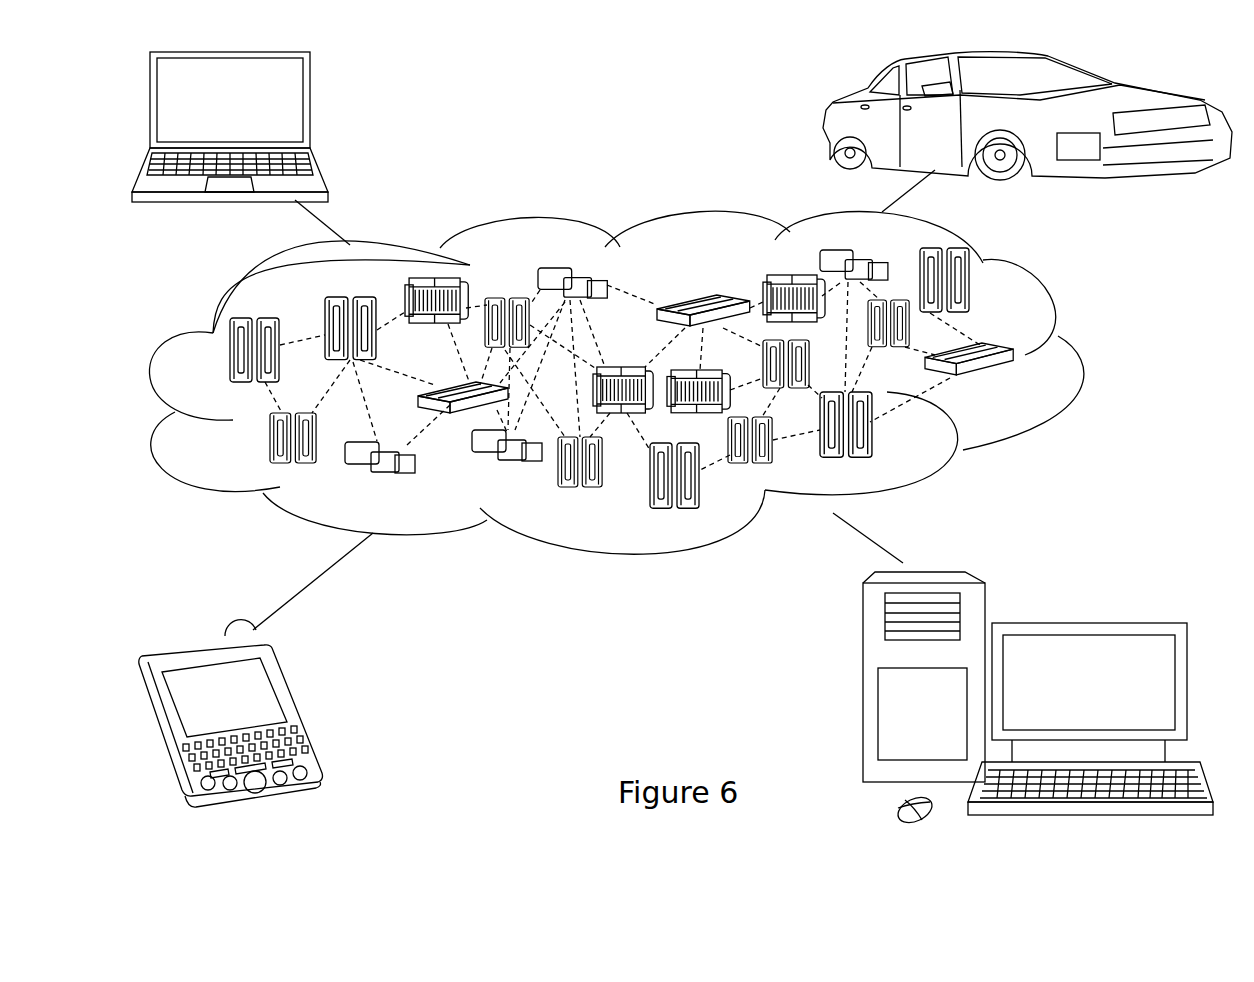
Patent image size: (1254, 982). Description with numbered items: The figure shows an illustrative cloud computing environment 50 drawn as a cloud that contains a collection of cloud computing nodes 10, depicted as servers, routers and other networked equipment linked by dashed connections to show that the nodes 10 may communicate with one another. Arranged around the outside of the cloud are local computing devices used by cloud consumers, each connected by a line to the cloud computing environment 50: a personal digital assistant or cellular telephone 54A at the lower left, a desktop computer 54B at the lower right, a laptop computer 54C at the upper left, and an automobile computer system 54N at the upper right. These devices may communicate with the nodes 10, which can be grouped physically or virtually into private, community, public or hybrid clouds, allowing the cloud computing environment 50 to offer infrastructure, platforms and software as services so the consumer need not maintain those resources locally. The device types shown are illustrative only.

The cloud computing node 10 is at (1012, 398).
The cloud computing environment 50 is at (1085, 362).
The personal digital assistant or cellular telephone 54A is at (302, 710).
The desktop computer 54B is at (1083, 623).
The laptop computer 54C is at (310, 108).
The automobile computer system 54N is at (827, 122).